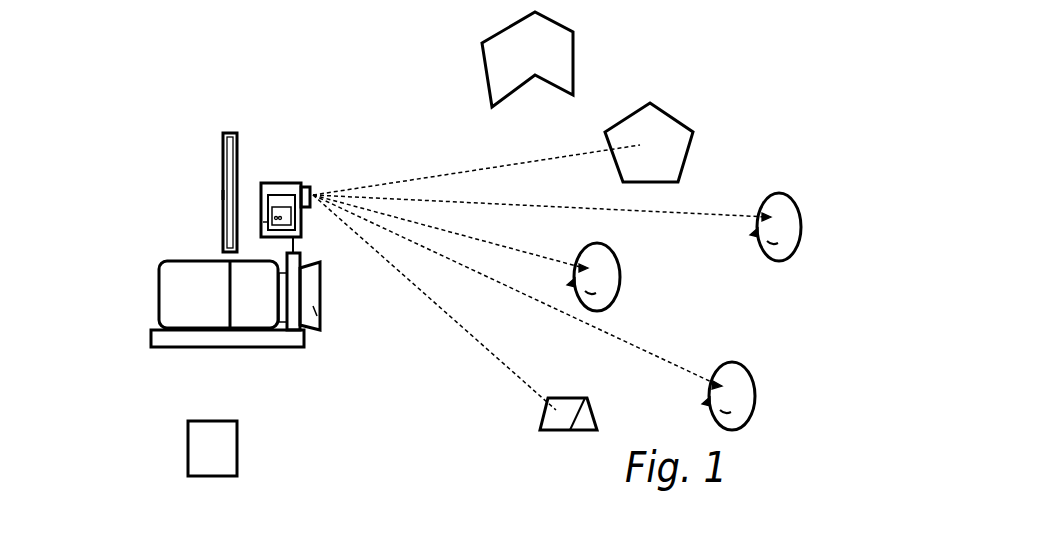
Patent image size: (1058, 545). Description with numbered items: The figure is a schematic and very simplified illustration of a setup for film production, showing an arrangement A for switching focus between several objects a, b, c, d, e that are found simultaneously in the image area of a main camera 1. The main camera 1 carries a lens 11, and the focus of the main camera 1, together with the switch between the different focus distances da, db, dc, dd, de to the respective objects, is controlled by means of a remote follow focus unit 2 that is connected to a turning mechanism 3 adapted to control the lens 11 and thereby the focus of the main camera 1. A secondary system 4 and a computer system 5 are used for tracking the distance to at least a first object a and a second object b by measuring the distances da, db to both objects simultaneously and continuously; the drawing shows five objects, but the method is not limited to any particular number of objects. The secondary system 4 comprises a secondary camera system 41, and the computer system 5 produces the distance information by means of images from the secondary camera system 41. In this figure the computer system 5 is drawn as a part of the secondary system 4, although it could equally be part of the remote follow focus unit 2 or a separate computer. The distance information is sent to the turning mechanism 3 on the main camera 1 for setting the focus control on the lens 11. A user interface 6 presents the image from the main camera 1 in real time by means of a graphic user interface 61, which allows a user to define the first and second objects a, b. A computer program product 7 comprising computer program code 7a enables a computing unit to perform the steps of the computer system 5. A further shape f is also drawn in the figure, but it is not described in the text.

The main camera 1 is at (175, 305).
The remote follow focus unit 2 is at (222, 445).
The turning mechanism 3 is at (296, 330).
The lens 11 is at (318, 327).
The secondary system 4 is at (298, 183).
The secondary camera system 41 is at (312, 189).
The computer system 5 is at (263, 222).
The user interface 6 is at (231, 140).
The graphic user interface 61 is at (212, 195).
The computer program product 7 is at (289, 203).
The computer program code 7a is at (277, 202).
The first object a is at (675, 138).
The second object b is at (787, 217).
The object c is at (610, 275).
The object d is at (738, 385).
The object e is at (548, 432).
The object f is at (557, 60).
The focus distance da is at (443, 176).
The focus distance db is at (706, 215).
The focus distance dc is at (538, 257).
The focus distance dd is at (467, 268).
The focus distance de is at (410, 283).
The arrangement A is at (365, 425).